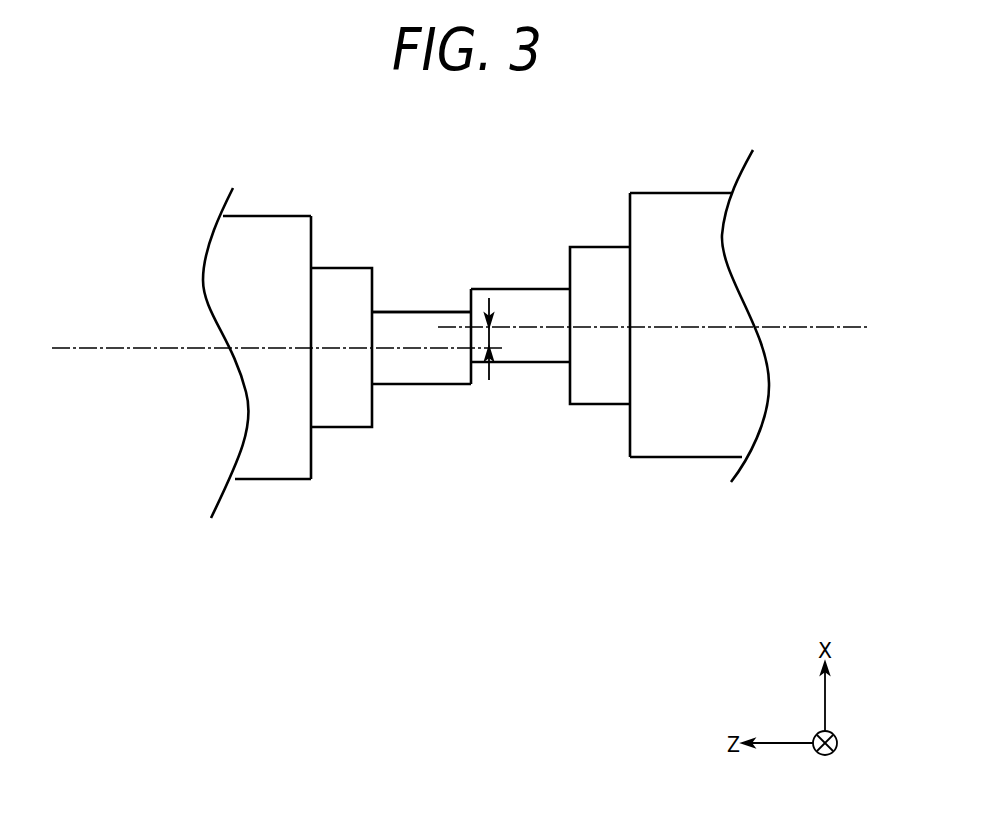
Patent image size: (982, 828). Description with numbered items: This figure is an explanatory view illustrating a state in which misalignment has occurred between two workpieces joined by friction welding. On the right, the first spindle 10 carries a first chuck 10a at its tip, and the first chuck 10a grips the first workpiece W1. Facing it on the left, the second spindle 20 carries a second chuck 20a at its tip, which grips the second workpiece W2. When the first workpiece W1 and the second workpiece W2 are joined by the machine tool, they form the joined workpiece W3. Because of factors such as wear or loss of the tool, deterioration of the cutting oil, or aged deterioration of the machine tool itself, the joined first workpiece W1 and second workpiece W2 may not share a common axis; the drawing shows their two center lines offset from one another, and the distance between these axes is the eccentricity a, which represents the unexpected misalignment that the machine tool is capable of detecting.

The first spindle 10 is at (684, 458).
The first chuck 10a is at (594, 264).
The second spindle 20 is at (272, 478).
The second chuck 20a is at (348, 283).
The first workpiece W1 is at (523, 347).
The second workpiece W2 is at (425, 363).
The joined workpiece W3 is at (433, 311).
The eccentricity a is at (490, 337).